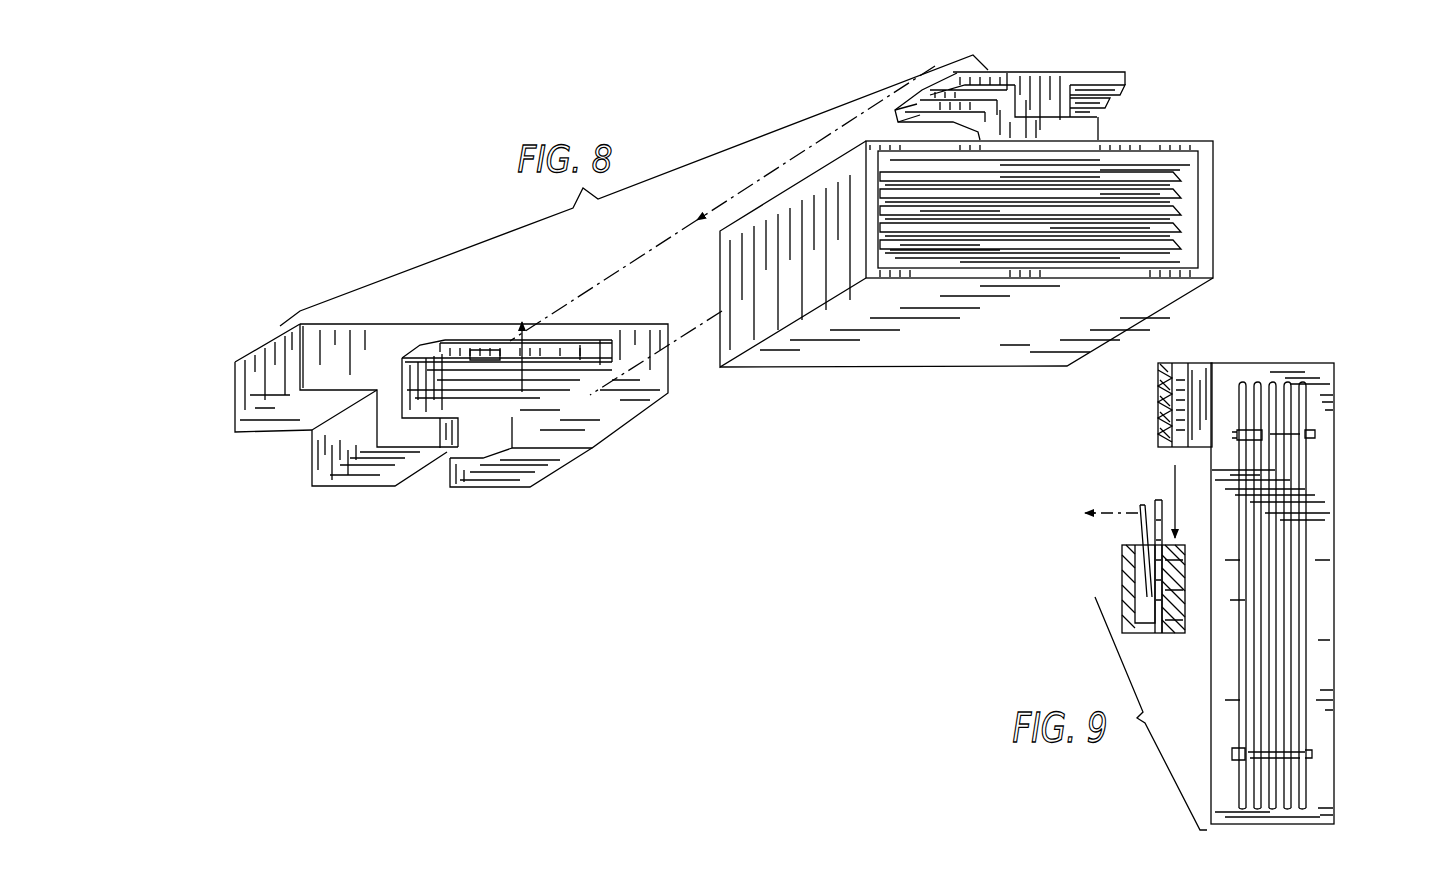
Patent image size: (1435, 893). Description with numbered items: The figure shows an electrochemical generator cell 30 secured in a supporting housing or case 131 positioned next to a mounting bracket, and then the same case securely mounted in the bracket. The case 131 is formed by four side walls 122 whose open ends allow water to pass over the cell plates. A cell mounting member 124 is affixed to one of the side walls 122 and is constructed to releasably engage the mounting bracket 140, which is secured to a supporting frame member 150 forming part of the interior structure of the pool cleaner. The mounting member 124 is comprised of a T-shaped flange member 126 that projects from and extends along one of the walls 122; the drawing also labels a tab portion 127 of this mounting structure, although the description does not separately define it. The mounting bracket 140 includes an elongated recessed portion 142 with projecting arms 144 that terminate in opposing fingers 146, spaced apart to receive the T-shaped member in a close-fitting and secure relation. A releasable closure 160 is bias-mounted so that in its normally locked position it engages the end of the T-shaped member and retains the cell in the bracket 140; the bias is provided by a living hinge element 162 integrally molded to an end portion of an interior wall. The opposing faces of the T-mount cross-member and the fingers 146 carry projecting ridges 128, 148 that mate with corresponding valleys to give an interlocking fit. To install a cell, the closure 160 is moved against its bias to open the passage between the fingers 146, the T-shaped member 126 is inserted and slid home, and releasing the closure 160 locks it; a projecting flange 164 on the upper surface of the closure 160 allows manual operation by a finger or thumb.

In FIG. 8, the cell 30 is at (938, 375).
In FIG. 9, the cell 30 is at (1118, 808).
In FIG. 8, the side wall 122 is at (1184, 139).
In FIG. 9, the side wall 122 is at (1293, 362).
In FIG. 8, the cell mounting member 124 is at (1052, 60).
In FIG. 8, the T-shaped flange member 126 is at (1050, 106).
In FIG. 9, the T-shaped flange member 126 is at (1200, 363).
In FIG. 8, the first tab 127 is at (972, 77).
In FIG. 9, the first tab 127 is at (1158, 404).
In FIG. 8, the projecting ridges 128 is at (1107, 113).
In FIG. 9, the projecting ridges 128 is at (1181, 363).
In FIG. 8, the supporting housing or case 131 is at (941, 343).
In FIG. 8, the mounting bracket 140 is at (483, 495).
In FIG. 8, the elongated recessed portion 142 is at (567, 412).
In FIG. 8, the projecting arms 144 is at (315, 440).
In FIG. 8, the opposing fingers 146 is at (378, 480).
In FIG. 9, the projecting ridges 148 is at (1168, 634).
In FIG. 8, the supporting frame member 150 is at (255, 362).
In FIG. 9, the supporting frame member 150 is at (1122, 564).
In FIG. 8, the releasable closure 160 is at (467, 348).
In FIG. 9, the releasable closure 160 is at (1154, 634).
In FIG. 8, the living hinge element 162 is at (404, 388).
In FIG. 9, the living hinge element 162 is at (1150, 505).
In FIG. 8, the projecting flange 164 is at (562, 378).